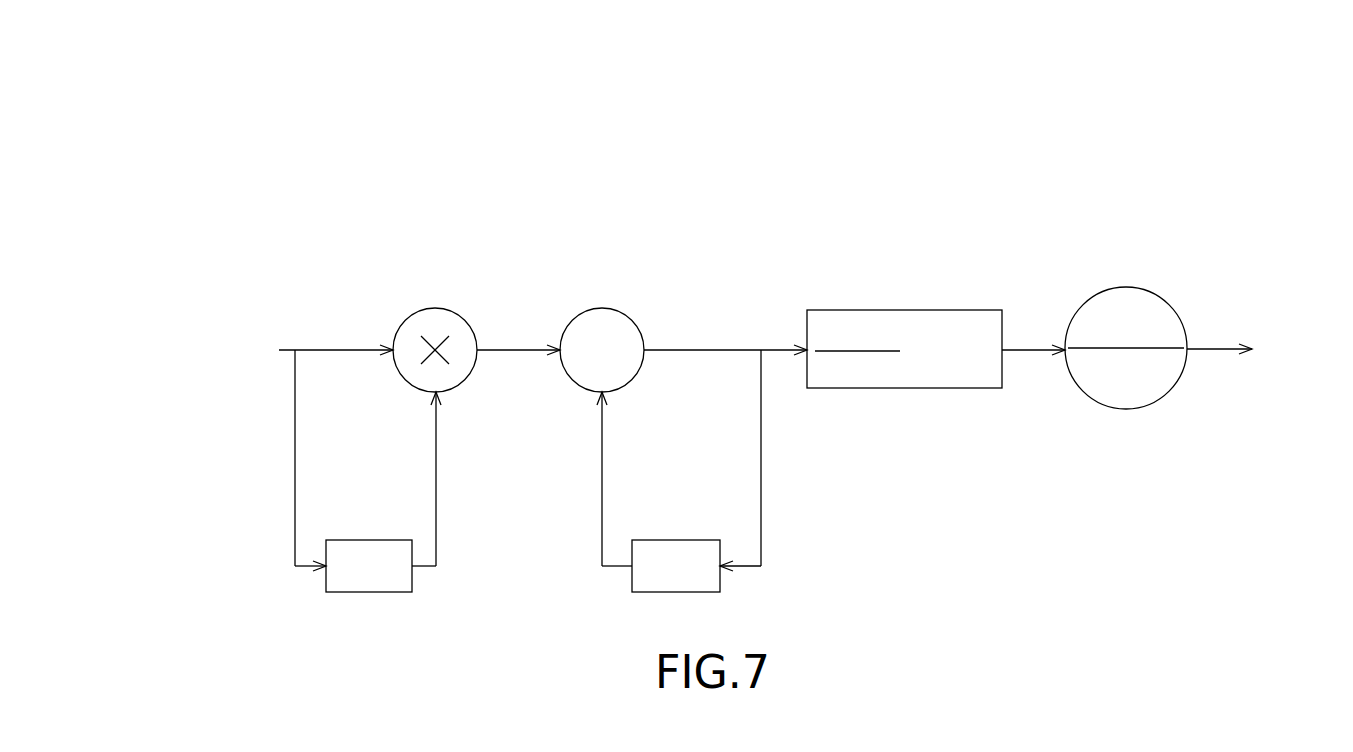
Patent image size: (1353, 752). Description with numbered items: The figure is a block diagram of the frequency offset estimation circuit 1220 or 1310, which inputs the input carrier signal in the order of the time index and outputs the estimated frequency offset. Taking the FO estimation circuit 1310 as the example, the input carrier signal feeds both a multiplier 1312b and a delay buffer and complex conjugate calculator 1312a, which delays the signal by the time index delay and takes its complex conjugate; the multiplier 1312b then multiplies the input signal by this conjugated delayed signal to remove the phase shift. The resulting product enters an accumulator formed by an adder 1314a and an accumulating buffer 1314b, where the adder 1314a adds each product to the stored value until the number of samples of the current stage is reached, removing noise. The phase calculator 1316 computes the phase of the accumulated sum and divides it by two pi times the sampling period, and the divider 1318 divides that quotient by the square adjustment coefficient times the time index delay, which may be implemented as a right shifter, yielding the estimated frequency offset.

The FO estimation circuit 1220 is at (198, 119).
The FO estimation circuit 1310 is at (297, 119).
The delay buffer and complex conjugate calculator 1312a is at (368, 540).
The multiplier 1312b is at (435, 308).
The adder 1314a is at (600, 308).
The accumulating buffer 1314b is at (677, 540).
The phase calculator 1316 is at (907, 310).
The divider 1318 is at (1128, 287).